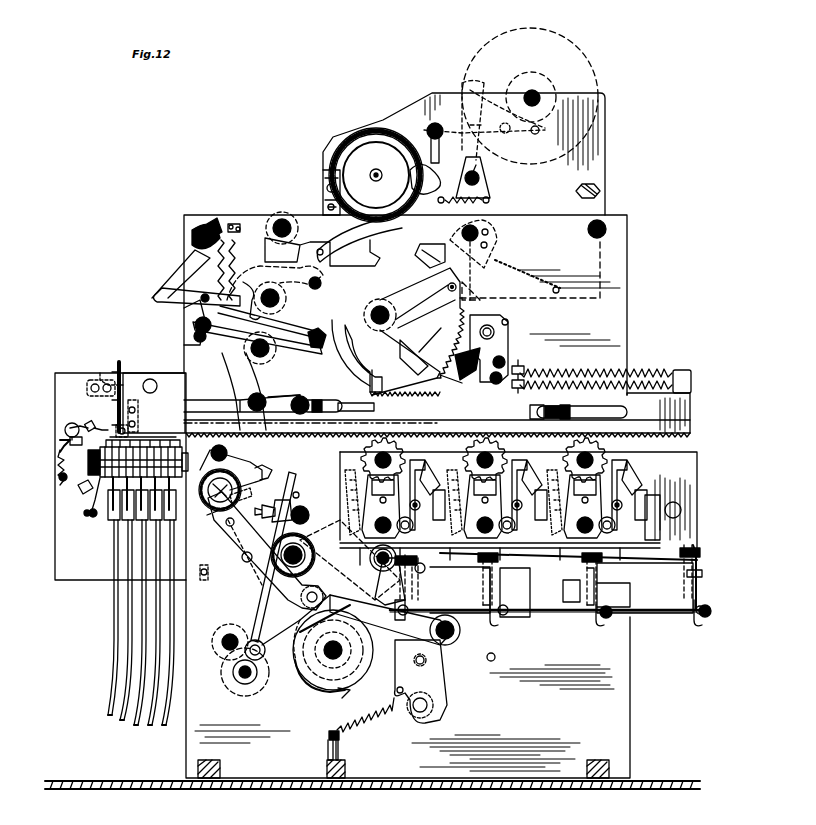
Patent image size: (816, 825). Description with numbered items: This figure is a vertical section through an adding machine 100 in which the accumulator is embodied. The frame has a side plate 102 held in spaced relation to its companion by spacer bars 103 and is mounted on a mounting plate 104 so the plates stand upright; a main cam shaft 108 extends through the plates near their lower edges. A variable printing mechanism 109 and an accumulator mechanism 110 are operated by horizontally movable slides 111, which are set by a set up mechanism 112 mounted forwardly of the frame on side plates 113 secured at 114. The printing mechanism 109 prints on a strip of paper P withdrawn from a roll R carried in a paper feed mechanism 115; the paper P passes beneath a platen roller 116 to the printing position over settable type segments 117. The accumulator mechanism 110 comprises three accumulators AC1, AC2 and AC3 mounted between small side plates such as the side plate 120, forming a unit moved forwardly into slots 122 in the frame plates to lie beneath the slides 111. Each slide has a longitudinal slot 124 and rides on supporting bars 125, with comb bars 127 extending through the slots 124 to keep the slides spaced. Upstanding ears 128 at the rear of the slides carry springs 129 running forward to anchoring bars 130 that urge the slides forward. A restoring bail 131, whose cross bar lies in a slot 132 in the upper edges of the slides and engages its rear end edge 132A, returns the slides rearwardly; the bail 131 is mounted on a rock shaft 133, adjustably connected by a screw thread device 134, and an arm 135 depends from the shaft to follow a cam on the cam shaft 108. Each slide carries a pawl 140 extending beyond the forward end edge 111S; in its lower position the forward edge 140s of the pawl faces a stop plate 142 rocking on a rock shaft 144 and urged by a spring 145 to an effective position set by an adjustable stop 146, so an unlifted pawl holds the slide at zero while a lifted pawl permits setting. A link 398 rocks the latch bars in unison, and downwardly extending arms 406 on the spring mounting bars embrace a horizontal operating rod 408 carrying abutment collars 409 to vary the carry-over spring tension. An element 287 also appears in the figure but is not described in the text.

The adding machine 100 is at (640, 300).
The side plate 102 is at (612, 672).
The spacer bars 103 is at (606, 230).
The mounting plate 104 is at (455, 790).
The main cam shaft 108 is at (336, 665).
The variable printing mechanism 109 is at (472, 278).
The accumulator mechanism 110 is at (698, 476).
The slides 111 is at (688, 410).
The forward end edge 111S is at (182, 380).
The set up mechanism 112 is at (86, 527).
The side plates 113 is at (70, 573).
The securing point 114 is at (203, 580).
The paper feed mechanism 115 is at (597, 152).
The platen roller 116 is at (360, 140).
The settable type segments 117 is at (330, 238).
The side plate 120 is at (683, 514).
The openings or slots 122 is at (624, 582).
The longitudinal slots 124 is at (608, 410).
The supporting bars 125 is at (362, 403).
The comb bars 127 is at (570, 408).
The upstanding ears 128 is at (684, 374).
The springs 129 is at (636, 372).
The anchoring bars 130 is at (520, 368).
The restoring bail 131 is at (304, 398).
The slot 132 is at (288, 418).
The rear end edge 132A is at (322, 392).
The rock shaft 133 is at (305, 556).
The screw thread device 134 is at (278, 503).
The arm 135 is at (254, 617).
The pawl 140 is at (148, 432).
The forward edge 140s is at (116, 428).
The stop plate 142 is at (65, 428).
The rock shaft 144 is at (60, 440).
The spring 145 is at (57, 462).
The adjustable or settable stop 146 is at (86, 424).
The lever 287 is at (210, 298).
The link 398 is at (540, 550).
The downwardly extending arm 406 is at (700, 595).
The horizontal operating rod 408 is at (520, 613).
The abutment collars 409 is at (606, 622).
The accumulator AC1 is at (370, 445).
The accumulator AC2 is at (482, 445).
The accumulator AC3 is at (606, 445).
The strip of paper P is at (414, 133).
The roll R is at (596, 68).